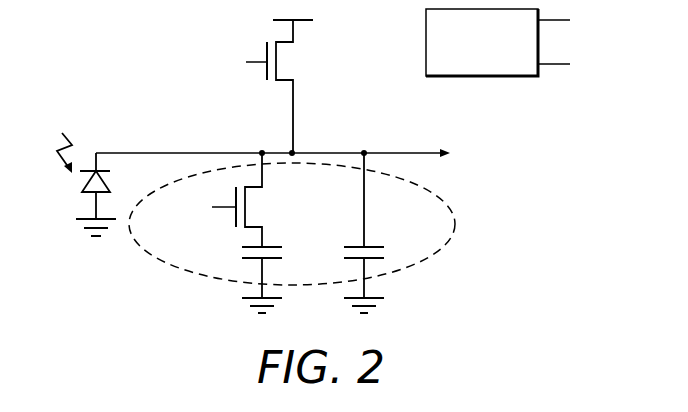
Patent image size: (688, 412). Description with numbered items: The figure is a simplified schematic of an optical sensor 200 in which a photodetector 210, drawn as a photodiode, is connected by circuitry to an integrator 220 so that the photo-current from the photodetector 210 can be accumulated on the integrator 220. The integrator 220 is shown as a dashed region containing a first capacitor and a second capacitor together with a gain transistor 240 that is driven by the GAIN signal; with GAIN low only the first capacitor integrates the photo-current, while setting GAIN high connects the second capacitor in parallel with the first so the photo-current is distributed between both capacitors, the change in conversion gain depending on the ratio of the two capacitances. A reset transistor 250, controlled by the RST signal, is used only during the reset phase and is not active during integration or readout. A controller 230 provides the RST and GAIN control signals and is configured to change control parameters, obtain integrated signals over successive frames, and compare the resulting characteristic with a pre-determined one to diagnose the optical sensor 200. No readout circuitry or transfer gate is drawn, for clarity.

The optical sensor 200 is at (116, 56).
The photodetector 210 is at (82, 183).
The integrator 220 is at (455, 220).
The controller 230 is at (463, 52).
The gain transistor 240 is at (262, 209).
The reset transistor 250 is at (292, 63).